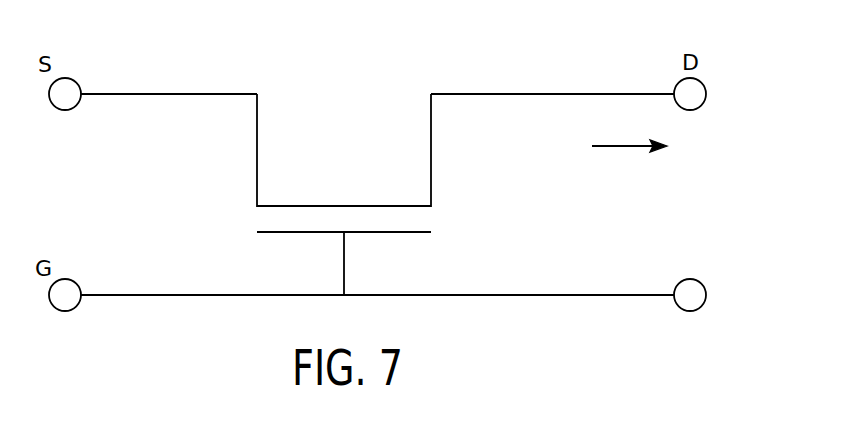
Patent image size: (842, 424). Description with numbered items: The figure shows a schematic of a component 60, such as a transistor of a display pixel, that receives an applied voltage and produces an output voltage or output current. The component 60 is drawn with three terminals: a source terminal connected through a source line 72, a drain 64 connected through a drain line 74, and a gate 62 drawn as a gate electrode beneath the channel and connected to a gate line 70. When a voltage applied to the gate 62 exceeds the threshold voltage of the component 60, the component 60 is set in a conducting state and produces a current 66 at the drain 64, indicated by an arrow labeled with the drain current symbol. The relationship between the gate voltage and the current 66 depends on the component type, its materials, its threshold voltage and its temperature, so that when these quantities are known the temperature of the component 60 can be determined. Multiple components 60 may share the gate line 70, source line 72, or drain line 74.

The component 60 is at (660, 25).
The gate 62 is at (345, 263).
The drain 64 is at (694, 110).
The current 66 is at (622, 144).
The gate line 70 is at (135, 297).
The source line 72 is at (165, 97).
The drain line 74 is at (552, 93).